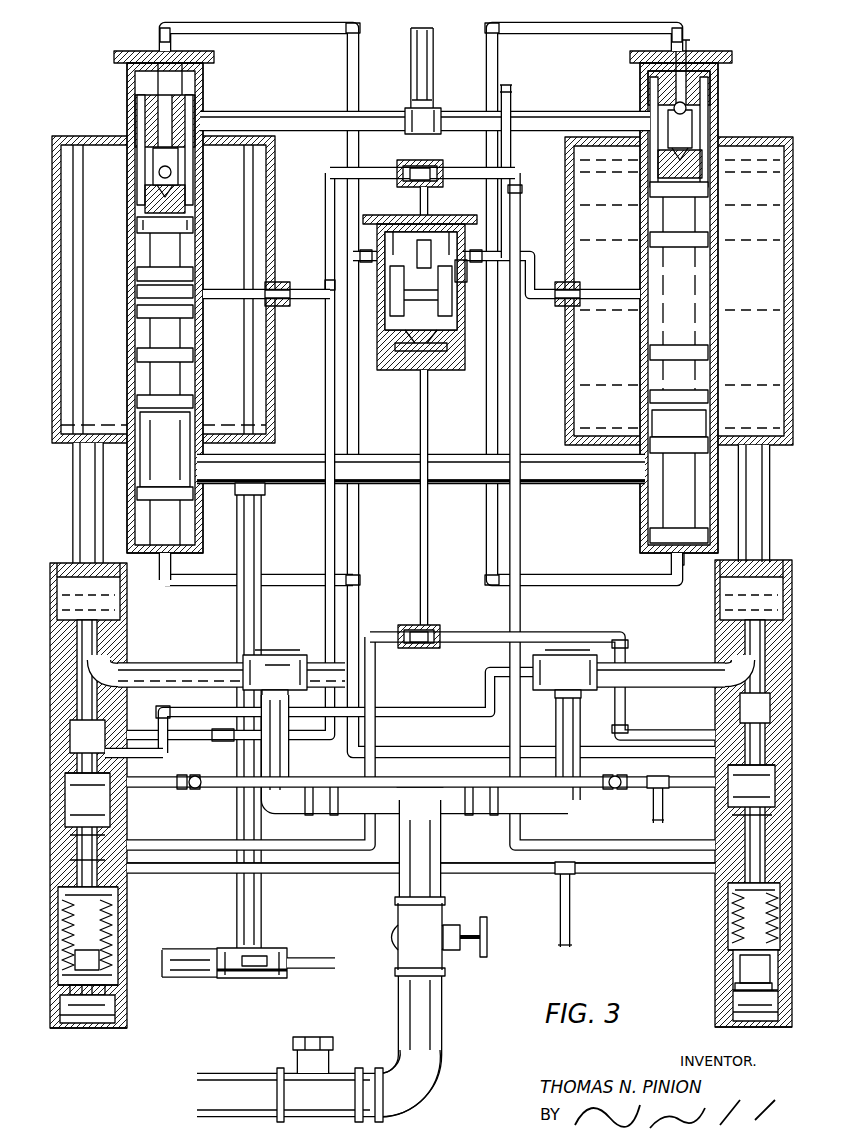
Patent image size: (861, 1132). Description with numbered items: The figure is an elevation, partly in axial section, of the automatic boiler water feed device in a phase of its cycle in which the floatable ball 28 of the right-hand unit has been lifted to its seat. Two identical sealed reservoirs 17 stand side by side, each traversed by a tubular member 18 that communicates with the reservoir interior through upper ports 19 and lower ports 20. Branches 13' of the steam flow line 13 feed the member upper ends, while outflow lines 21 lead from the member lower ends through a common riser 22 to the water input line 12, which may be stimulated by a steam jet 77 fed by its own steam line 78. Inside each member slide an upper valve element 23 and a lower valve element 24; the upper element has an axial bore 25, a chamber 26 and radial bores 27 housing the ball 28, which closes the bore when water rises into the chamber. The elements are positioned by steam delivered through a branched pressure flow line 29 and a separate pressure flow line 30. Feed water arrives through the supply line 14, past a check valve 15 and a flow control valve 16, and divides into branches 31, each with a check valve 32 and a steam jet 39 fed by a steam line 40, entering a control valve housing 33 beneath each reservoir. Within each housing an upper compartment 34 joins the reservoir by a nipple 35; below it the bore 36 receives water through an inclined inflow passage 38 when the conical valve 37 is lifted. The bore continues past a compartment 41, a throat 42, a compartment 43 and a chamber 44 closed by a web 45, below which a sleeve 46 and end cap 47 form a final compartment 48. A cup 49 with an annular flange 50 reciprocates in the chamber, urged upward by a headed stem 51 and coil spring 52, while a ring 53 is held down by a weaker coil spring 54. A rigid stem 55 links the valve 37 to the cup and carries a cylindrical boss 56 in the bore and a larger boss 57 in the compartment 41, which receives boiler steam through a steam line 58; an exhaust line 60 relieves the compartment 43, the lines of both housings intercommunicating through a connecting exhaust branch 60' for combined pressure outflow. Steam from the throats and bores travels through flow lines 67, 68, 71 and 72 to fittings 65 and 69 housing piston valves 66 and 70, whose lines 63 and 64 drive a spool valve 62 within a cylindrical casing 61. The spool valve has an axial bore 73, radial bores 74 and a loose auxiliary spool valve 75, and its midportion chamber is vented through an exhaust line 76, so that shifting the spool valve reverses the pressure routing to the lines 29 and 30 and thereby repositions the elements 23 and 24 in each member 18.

The water input line 12 is at (200, 950).
The steam flow line 13 is at (405, 74).
The branch of steam flow line 13' is at (425, 112).
The water supply line 14 is at (400, 896).
The check valve 15 is at (293, 1070).
The flow control valve 16 is at (398, 955).
The reservoir 17 is at (62, 136).
The tubular member 18 is at (205, 92).
The ports 19 is at (137, 150).
The ports 20 is at (137, 412).
The outflow line 21 is at (230, 486).
The common riser 22 is at (240, 603).
The upper valve element 23 is at (422, 231).
The lower valve element 24 is at (422, 327).
The axial bore 25 is at (170, 82).
The chamber 26 is at (153, 160).
The radial bores 27 is at (185, 198).
The floatable ball 28 is at (160, 178).
The branched pressure flow line 29 is at (290, 30).
The pressure flow line 30 is at (218, 290).
The branch 31 is at (218, 660).
The check valve 32 is at (322, 812).
The control valve housing 33 is at (52, 680).
The upper chamber compartment 34 is at (60, 568).
The nipple 35 is at (73, 478).
The vertical housing bore 36 is at (110, 700).
The conical valve 37 is at (120, 614).
The inflow passage 38 is at (112, 662).
The steam jet 39 is at (278, 655).
The steam line 40 is at (462, 745).
The compartment 41 is at (65, 778).
The throat 42 is at (70, 838).
The compartment 43 is at (70, 862).
The chamber 44 is at (65, 890).
The web 45 is at (105, 990).
The sleeve 46 is at (100, 1018).
The end cap 47 is at (58, 1030).
The final housing compartment 48 is at (60, 1008).
The cup 49 is at (118, 912).
The annular flange 50 is at (62, 968).
The headed stem 51 is at (82, 1010).
The coil spring 52 is at (99, 962).
The ring 53 is at (62, 940).
The coil spring 54 is at (118, 928).
The rigid stem 55 is at (78, 640).
The cylindrical boss 56 is at (70, 730).
The cylindrical boss 57 is at (66, 800).
The steam line 58 is at (208, 788).
The exhaust line 60 is at (421, 880).
The branch pipe 60' is at (585, 904).
The cylindrical casing 61 is at (392, 213).
The spool valve 62 is at (426, 245).
The pressure flow line 63 is at (428, 545).
The pressure flow line 64 is at (428, 196).
The fitting 65 is at (432, 633).
The piston valve 66 is at (400, 628).
The pressure flow line 67 is at (376, 684).
The flow line 68 is at (676, 737).
The fitting 69 is at (428, 165).
The piston valve 70 is at (410, 164).
The flow line 71 is at (520, 205).
The flow line 72 is at (326, 216).
The axial bore 73 is at (469, 271).
The radial bores 74 is at (390, 305).
The auxiliary spool valve 75 is at (408, 270).
The exhaust line 76 is at (512, 96).
The steam jet 77 is at (250, 968).
The steam line 78 is at (312, 958).